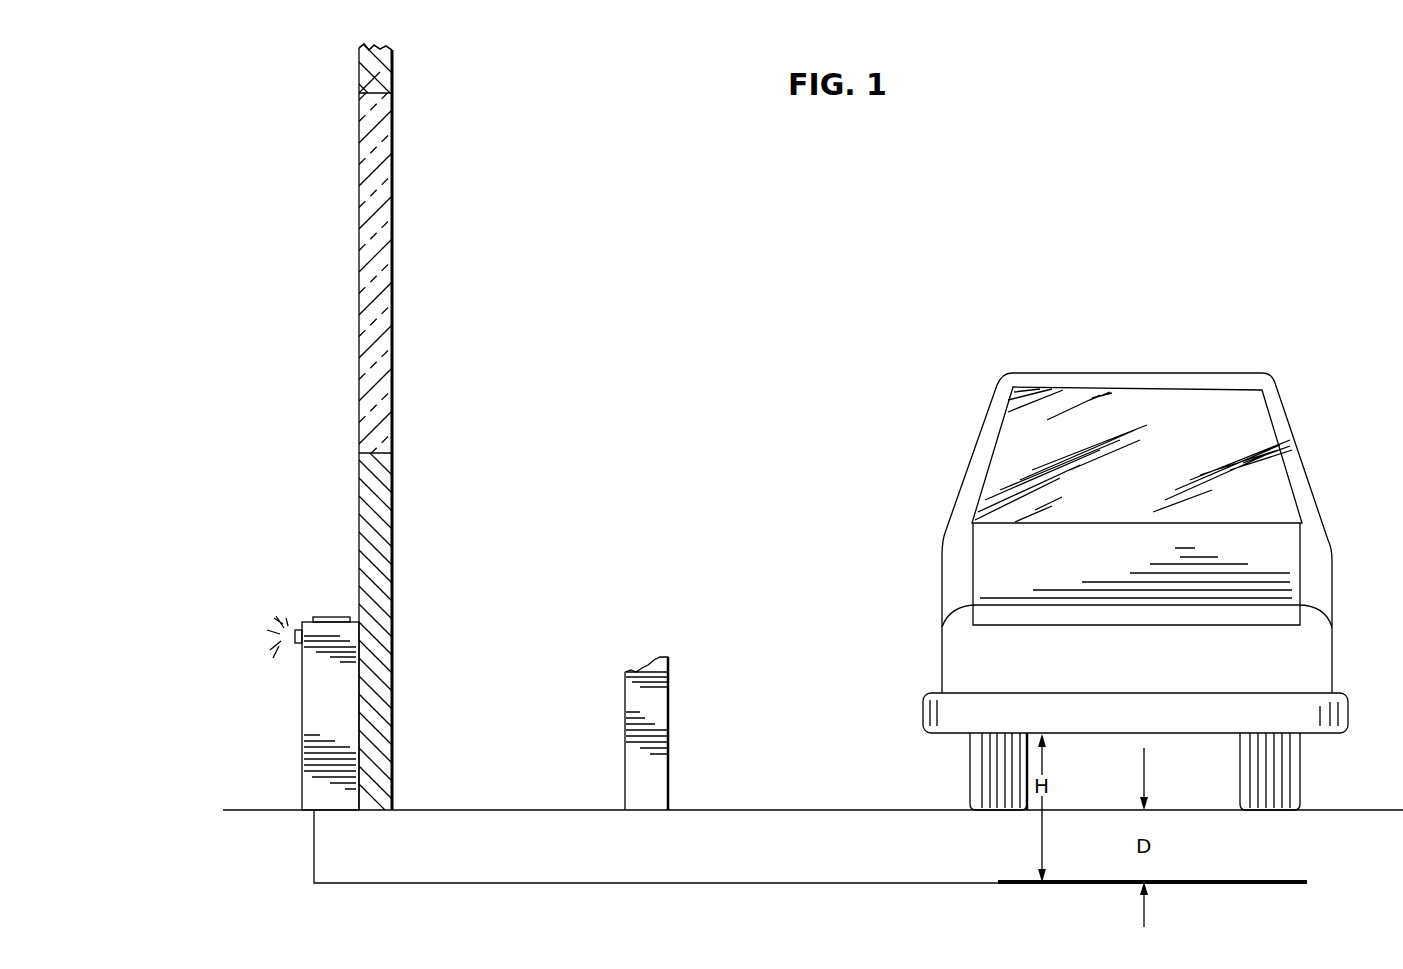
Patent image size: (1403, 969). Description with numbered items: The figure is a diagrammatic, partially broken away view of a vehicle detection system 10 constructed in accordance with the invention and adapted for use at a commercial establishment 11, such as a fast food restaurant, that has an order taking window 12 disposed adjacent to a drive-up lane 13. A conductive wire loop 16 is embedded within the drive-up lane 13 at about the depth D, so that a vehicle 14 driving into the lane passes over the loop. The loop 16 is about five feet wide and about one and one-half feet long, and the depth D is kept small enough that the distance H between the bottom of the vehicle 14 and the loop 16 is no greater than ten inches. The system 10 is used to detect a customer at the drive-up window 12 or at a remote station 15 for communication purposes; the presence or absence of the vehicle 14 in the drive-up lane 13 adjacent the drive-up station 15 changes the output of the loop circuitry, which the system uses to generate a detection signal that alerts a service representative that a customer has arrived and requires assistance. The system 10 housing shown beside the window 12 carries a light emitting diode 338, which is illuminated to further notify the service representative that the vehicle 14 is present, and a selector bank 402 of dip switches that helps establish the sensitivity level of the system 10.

The vehicle detection system 10 is at (277, 692).
The commercial establishment 11 is at (462, 88).
The order taking window 12 is at (393, 165).
The drive-up lane 13 is at (945, 790).
The vehicle 14 is at (960, 652).
The remote station 15 is at (682, 713).
The conductive wire loop 16 is at (1306, 883).
The light emitting diode 338 is at (298, 624).
The selector bank 402 is at (328, 617).